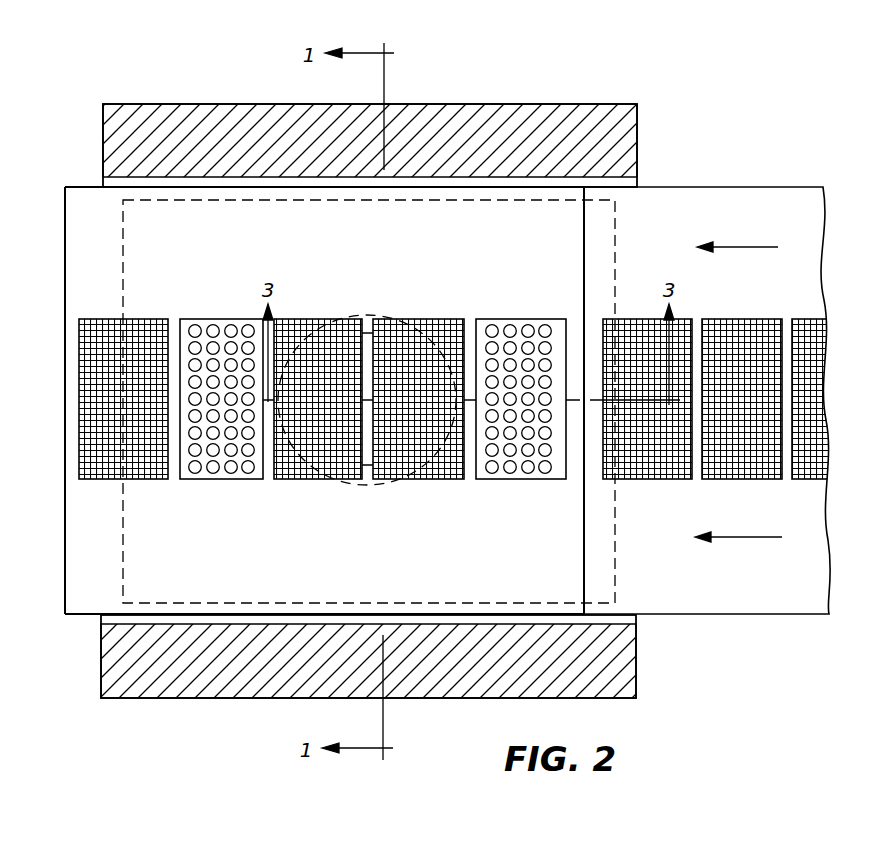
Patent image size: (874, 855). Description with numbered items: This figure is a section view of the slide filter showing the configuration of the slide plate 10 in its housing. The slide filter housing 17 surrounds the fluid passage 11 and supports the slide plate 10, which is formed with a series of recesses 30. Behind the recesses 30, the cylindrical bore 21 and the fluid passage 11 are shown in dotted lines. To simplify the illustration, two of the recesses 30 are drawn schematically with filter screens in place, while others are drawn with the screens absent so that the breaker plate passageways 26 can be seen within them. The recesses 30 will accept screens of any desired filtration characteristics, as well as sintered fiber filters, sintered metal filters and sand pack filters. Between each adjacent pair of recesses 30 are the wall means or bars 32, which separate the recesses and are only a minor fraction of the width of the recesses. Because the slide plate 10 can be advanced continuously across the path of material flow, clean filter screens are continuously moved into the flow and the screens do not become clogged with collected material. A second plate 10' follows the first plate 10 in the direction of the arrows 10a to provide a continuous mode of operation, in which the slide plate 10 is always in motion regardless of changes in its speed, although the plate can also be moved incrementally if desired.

The slide plate 10 is at (340, 400).
The second plate 10' is at (707, 400).
The arrows 10a is at (742, 247).
The fluid passage 11 is at (410, 362).
The slide filter housing 17 is at (637, 681).
The cylindrical bore 21 is at (360, 495).
The breaker plate passageways 26 is at (248, 475).
The recesses 30 is at (212, 318).
The bars 32 is at (175, 478).